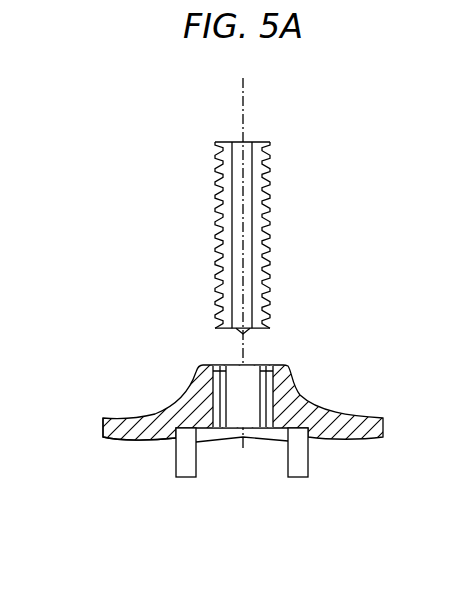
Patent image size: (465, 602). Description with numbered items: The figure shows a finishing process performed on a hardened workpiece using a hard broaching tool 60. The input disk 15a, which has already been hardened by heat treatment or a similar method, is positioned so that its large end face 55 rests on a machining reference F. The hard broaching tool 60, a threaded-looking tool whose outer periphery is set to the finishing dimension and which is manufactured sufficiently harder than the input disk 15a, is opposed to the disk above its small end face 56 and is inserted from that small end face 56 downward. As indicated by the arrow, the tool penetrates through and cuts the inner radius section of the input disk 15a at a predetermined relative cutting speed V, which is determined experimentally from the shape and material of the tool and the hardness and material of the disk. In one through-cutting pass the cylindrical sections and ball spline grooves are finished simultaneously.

The hard broaching tool 60 is at (271, 157).
The small end face 56 is at (283, 365).
The large end face 55 is at (278, 440).
The input disk 15a is at (96, 439).
The relative cutting speed V is at (295, 192).
The machining reference F is at (325, 476).